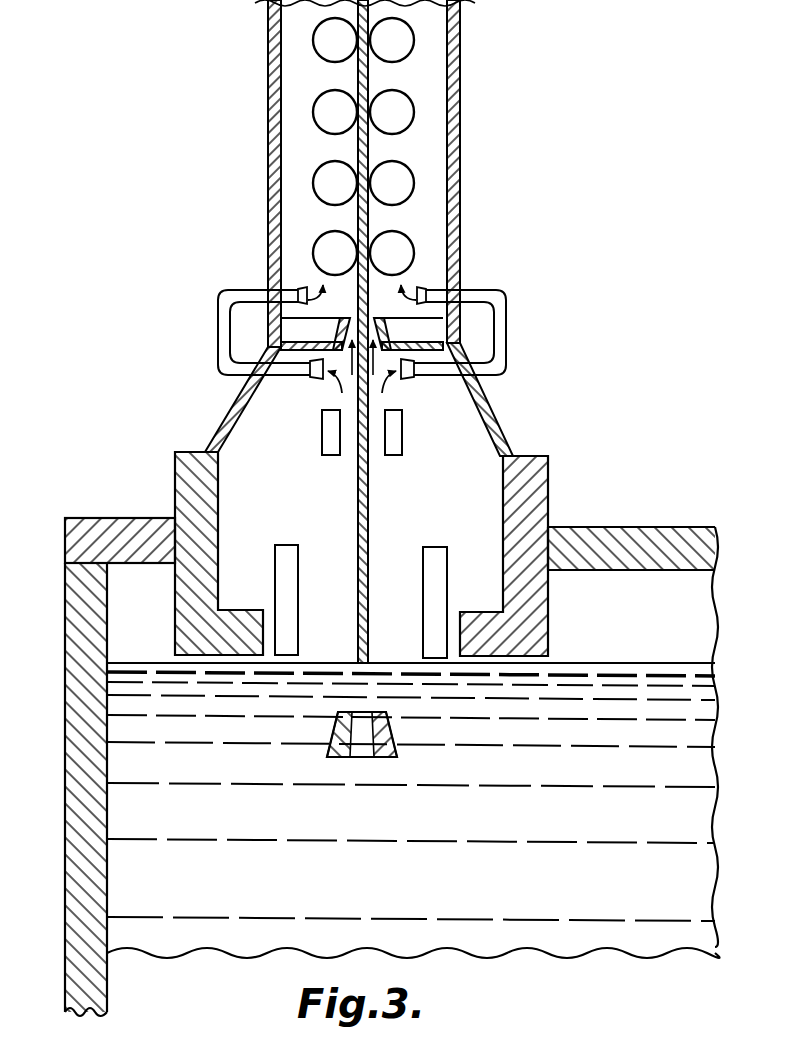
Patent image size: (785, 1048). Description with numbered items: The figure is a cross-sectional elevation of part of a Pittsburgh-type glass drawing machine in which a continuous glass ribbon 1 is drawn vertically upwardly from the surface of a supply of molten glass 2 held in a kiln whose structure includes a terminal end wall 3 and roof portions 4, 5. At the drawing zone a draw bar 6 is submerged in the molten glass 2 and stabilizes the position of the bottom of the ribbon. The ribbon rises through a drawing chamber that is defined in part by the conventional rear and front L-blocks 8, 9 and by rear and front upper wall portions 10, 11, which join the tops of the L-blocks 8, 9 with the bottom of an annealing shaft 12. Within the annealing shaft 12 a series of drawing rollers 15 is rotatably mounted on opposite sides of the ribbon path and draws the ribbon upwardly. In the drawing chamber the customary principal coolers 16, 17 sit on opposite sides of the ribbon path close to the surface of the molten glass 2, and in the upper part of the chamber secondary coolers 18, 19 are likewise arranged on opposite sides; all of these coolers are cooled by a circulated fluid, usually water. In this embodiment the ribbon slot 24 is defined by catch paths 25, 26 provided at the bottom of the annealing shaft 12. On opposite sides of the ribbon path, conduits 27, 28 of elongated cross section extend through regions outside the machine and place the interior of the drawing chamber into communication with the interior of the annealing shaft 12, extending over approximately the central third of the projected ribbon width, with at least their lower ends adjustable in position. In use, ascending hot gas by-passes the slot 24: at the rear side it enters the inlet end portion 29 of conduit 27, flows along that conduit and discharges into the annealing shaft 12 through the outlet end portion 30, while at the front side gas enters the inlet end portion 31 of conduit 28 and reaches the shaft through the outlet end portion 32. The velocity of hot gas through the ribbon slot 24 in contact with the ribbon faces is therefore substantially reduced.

The central partition wall 1 is at (370, 508).
The supply of molten glass 2 is at (350, 901).
The terminal end wall 3 is at (90, 820).
The roof portion 4 is at (112, 533).
The roof portion 5 is at (657, 550).
The draw bar 6 is at (333, 758).
The rear L-block 8 is at (198, 500).
The front L-block 9 is at (518, 502).
The rear upper wall portion 10 is at (232, 407).
The front upper wall portion 11 is at (500, 416).
The annealing shaft 12 is at (478, 185).
The drawing rollers 15 is at (337, 110).
The principal cooler 16 is at (288, 582).
The principal cooler 17 is at (432, 593).
The secondary cooler 18 is at (332, 429).
The secondary cooler 19 is at (392, 429).
The ribbon slot 24 is at (372, 313).
The catch path 25 is at (312, 338).
The catch path 26 is at (446, 328).
The conduit 27 is at (220, 345).
The conduit 28 is at (508, 353).
The inlet end portion 29 is at (319, 371).
The outlet end portion 30 is at (296, 293).
The inlet end portion 31 is at (407, 372).
The outlet end portion 32 is at (438, 290).